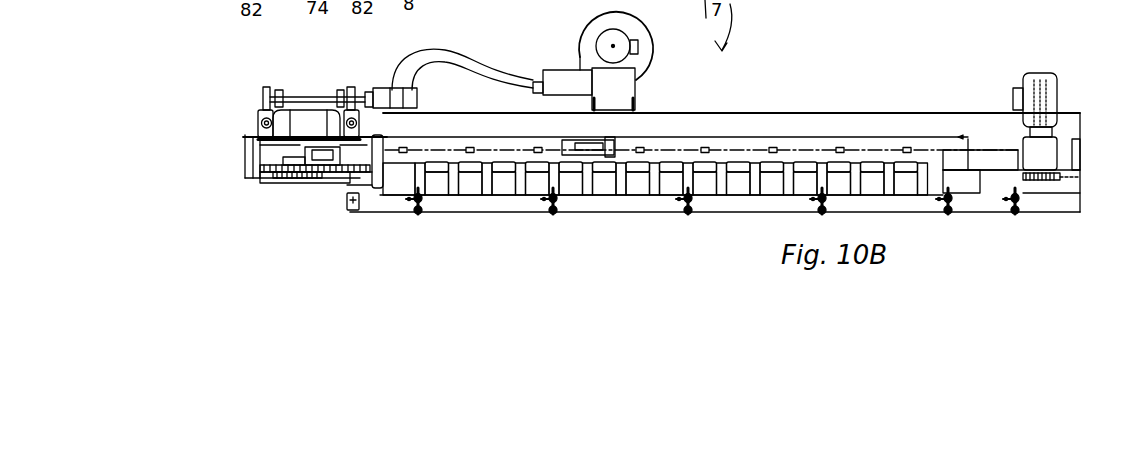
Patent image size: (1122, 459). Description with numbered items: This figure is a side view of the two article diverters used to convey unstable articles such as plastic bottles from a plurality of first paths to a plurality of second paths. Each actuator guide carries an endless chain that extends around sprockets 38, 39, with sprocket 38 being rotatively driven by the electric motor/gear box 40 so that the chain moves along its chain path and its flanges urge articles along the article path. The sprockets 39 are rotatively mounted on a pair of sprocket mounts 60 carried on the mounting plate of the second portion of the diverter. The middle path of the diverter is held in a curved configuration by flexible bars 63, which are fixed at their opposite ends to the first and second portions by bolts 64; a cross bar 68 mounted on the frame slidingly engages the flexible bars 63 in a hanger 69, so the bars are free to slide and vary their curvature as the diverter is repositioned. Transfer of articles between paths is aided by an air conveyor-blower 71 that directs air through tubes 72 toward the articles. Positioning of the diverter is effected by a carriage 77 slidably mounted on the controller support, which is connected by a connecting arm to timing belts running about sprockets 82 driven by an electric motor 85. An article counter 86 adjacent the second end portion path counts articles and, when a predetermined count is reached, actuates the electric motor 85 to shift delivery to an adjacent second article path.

The sprocket 38 is at (1060, 181).
The sprocket 39 is at (278, 183).
The electric motor/gear box 40 is at (1058, 90).
The sprocket mount 60 is at (256, 138).
The flexible bar 63 is at (745, 160).
The bolt 64 is at (975, 172).
The cross bar 68 is at (613, 138).
The hanger 69 is at (612, 144).
The air conveyor-blower 71 is at (600, 30).
The tube 72 is at (498, 72).
The carriage 77 is at (370, 140).
The sprocket 82 is at (268, 70).
The electric motor 85 is at (418, 94).
The article counter 86 is at (267, 178).